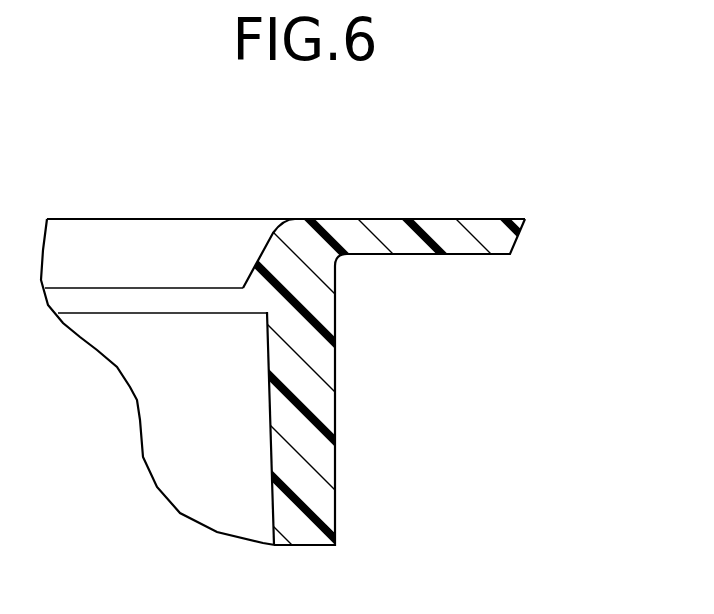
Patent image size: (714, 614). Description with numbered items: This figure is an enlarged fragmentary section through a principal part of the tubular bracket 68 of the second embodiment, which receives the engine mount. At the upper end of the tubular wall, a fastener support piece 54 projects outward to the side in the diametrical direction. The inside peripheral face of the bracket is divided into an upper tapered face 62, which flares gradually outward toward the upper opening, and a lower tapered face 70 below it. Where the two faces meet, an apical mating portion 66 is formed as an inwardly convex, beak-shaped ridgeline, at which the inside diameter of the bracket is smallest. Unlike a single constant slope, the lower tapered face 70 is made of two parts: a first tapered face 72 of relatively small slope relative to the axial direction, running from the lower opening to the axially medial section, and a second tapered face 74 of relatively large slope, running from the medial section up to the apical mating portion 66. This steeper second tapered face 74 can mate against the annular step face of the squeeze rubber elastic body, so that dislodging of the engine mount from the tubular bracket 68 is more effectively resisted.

The tubular bracket 68 is at (502, 132).
The apical mating portion 66 is at (110, 288).
The upper tapered face 62 is at (262, 253).
The fastener support piece 54 is at (398, 237).
The lower tapered face 70 is at (420, 329).
The second tapered face 74 is at (266, 325).
The first tapered face 72 is at (268, 387).